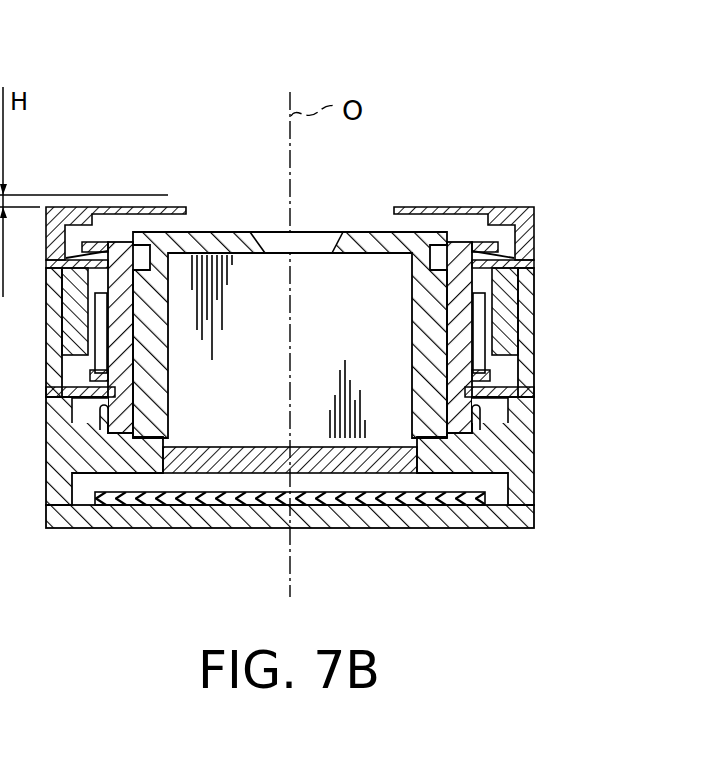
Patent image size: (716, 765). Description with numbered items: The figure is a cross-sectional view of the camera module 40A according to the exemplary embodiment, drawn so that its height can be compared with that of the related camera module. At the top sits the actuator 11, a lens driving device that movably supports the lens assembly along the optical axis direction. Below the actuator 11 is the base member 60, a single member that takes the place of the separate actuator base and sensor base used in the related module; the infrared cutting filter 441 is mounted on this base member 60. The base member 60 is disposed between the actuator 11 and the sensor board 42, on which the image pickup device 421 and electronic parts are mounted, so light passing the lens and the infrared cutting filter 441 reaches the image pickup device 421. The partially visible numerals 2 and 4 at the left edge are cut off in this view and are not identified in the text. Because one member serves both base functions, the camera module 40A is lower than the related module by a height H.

The camera module 40A is at (507, 115).
The actuator 11 is at (566, 236).
The base member 60 is at (530, 437).
The infrared cutting filter 441 is at (362, 510).
The image pickup device 421 is at (190, 507).
The sensor board 42 is at (500, 530).
The truncated numeral (left edge) 2 is at (10, 415).
The truncated numeral (left edge) 4 is at (7, 478).